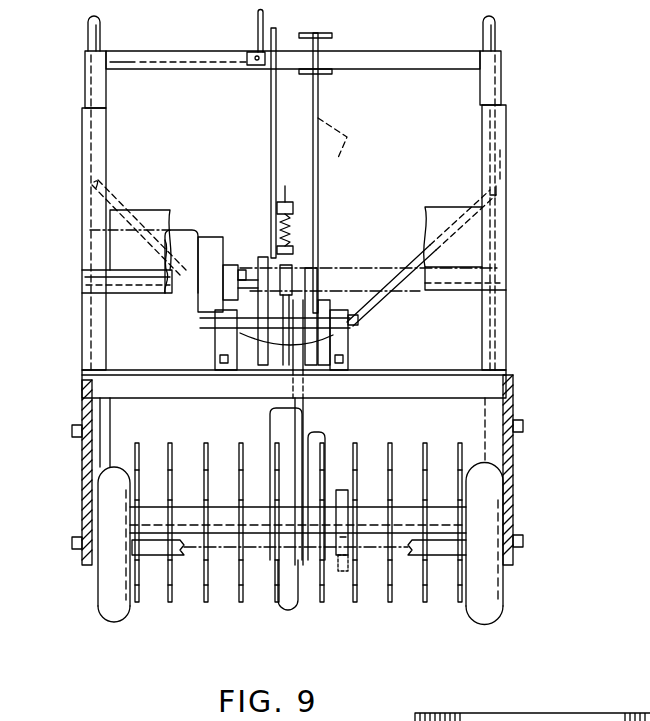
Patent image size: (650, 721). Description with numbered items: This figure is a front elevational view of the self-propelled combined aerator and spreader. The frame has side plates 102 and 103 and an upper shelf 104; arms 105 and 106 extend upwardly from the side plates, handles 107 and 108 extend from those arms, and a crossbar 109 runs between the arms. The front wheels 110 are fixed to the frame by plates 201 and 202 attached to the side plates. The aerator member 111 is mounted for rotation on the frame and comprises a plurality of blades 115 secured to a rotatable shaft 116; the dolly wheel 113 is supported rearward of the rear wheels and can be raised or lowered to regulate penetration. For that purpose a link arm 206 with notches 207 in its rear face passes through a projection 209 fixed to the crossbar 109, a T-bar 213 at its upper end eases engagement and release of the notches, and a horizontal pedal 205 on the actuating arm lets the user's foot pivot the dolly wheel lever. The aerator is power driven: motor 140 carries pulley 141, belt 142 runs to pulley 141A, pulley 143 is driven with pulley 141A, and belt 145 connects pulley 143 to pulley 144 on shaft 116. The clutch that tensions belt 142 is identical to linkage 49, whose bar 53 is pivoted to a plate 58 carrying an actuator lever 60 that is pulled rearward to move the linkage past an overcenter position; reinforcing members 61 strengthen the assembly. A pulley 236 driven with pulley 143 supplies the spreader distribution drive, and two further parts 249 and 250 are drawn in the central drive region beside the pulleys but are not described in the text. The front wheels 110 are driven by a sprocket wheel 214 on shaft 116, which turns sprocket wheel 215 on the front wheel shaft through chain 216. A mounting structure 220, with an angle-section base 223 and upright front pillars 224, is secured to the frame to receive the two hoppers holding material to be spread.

The second linkage 49 is at (272, 200).
The bar 53 is at (270, 127).
The plate 58 is at (268, 66).
The actuator lever 60 is at (258, 30).
The reinforcing member 61 is at (418, 258).
The side plate 102 is at (88, 450).
The side plate 103 is at (512, 452).
The upper shelf 104 is at (370, 378).
The arm 105 is at (90, 102).
The arm 106 is at (497, 100).
The handle 107 is at (90, 40).
The handle 108 is at (497, 36).
The crossbar 109 is at (182, 58).
The front wheel 110 is at (110, 597).
The aerator member 111 is at (190, 604).
The dolly wheel 113 is at (296, 612).
The blade 115 is at (242, 604).
The rotatable shaft 116 is at (410, 512).
The motor 140 is at (183, 235).
The pulley 141 is at (260, 268).
The pulley 141A is at (255, 348).
The belt 142 is at (215, 330).
The pulley 143 is at (308, 292).
The pulley 144 is at (297, 497).
The belt 145 is at (295, 446).
The plate 201 is at (85, 497).
The plate 202 is at (512, 505).
The horizontal pedal 205 is at (303, 352).
The link arm 206 is at (320, 200).
The notch 207 is at (343, 140).
The projection 209 is at (332, 72).
The T-bar 213 is at (332, 34).
The sprocket wheel 214 is at (340, 490).
The sprocket wheel 215 is at (340, 572).
The chain 216 is at (343, 540).
The mounting structure 220 is at (510, 161).
The base 223 is at (150, 220).
The front pillar 224 is at (95, 163).
The pulley 236 is at (220, 352).
The shaft 249 is at (285, 348).
The collar 250 is at (286, 280).